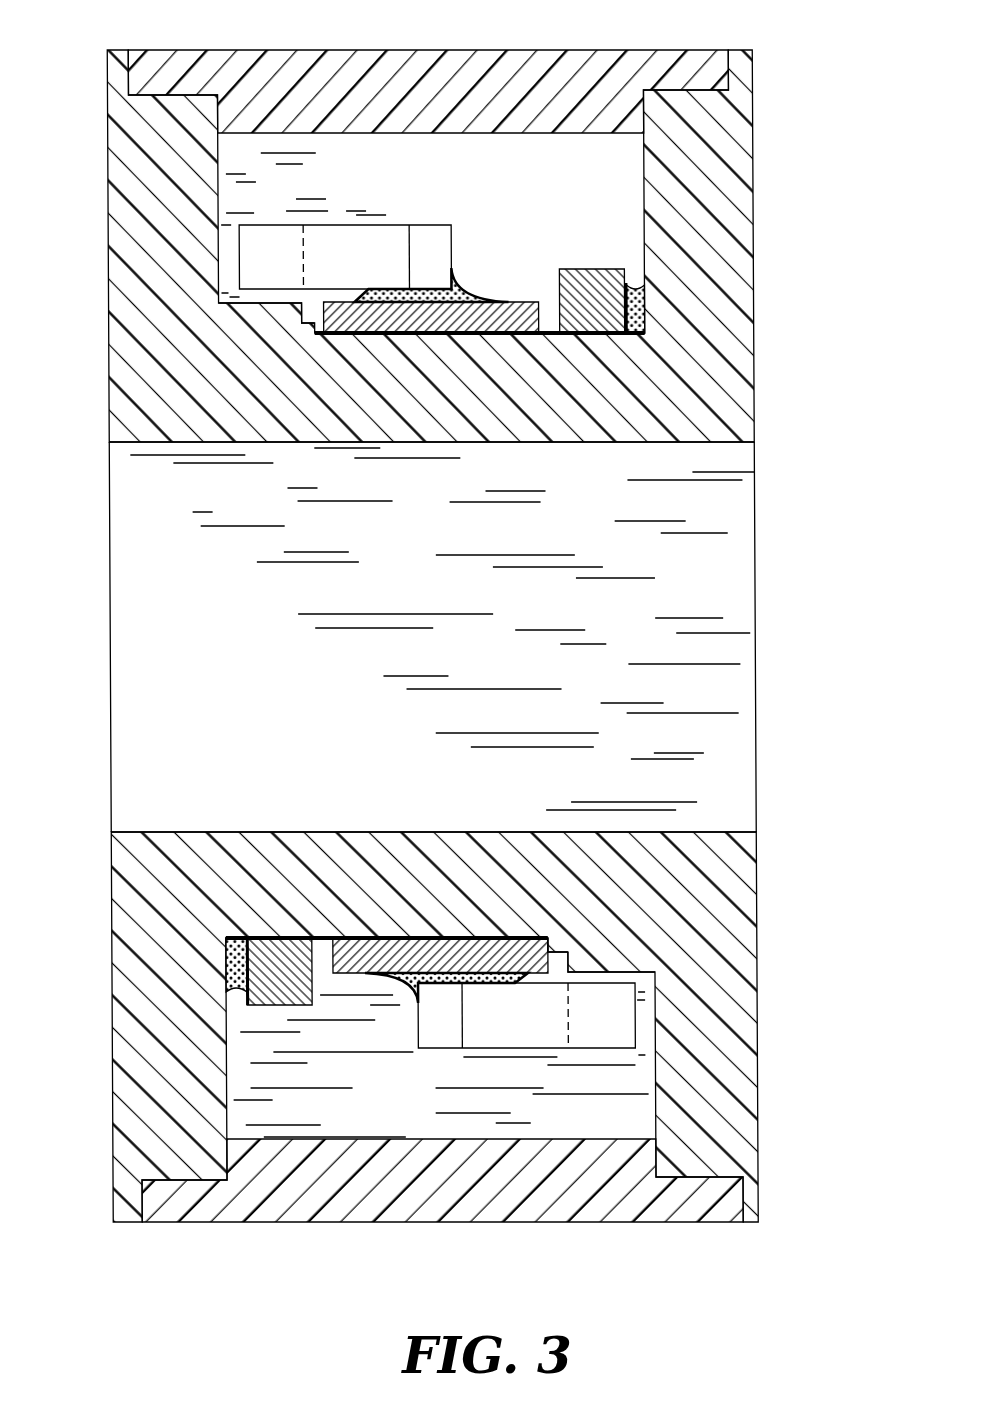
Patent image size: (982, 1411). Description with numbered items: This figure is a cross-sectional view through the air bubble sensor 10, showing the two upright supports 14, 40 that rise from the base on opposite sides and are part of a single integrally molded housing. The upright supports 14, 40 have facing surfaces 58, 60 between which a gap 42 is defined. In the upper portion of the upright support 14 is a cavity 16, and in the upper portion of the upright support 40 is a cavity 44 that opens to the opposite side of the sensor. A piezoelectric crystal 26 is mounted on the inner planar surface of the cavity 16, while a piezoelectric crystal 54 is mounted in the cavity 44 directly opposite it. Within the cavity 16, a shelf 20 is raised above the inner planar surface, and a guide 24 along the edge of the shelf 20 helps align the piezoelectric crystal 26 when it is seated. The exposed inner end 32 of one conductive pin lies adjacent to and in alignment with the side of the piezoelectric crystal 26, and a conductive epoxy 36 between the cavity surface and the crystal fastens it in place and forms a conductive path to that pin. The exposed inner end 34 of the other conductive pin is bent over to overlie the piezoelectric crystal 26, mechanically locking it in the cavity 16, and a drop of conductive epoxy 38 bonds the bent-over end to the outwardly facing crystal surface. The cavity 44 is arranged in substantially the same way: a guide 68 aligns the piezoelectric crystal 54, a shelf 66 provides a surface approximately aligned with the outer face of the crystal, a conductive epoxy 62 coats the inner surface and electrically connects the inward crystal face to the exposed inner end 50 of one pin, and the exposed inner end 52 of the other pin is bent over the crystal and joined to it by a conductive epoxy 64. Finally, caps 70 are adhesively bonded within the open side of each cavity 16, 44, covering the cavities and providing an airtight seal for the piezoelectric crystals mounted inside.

The air bubble sensor 10 is at (196, 1281).
The upright support 14 is at (112, 1133).
The cavity 16 is at (400, 1123).
The shelf 20 is at (617, 968).
The guide 24 is at (553, 950).
The piezoelectric crystal 26 is at (542, 940).
The exposed inner end 32 is at (247, 935).
The exposed inner end 34 is at (630, 1015).
The conductive epoxy 36 is at (221, 982).
The conductive epoxy 38 is at (410, 987).
The upright support 40 is at (754, 320).
The gap 42 is at (318, 679).
The cavity 44 is at (454, 168).
The exposed inner end 50 is at (577, 270).
The exposed inner end 52 is at (240, 268).
The piezoelectric crystal 54 is at (326, 337).
The facing surface 58 is at (353, 831).
The facing surface 60 is at (472, 443).
The conductive epoxy 62 is at (640, 283).
The conductive epoxy 64 is at (470, 288).
The shelf 66 is at (263, 305).
The guide 68 is at (315, 328).
The caps 70 is at (312, 50).